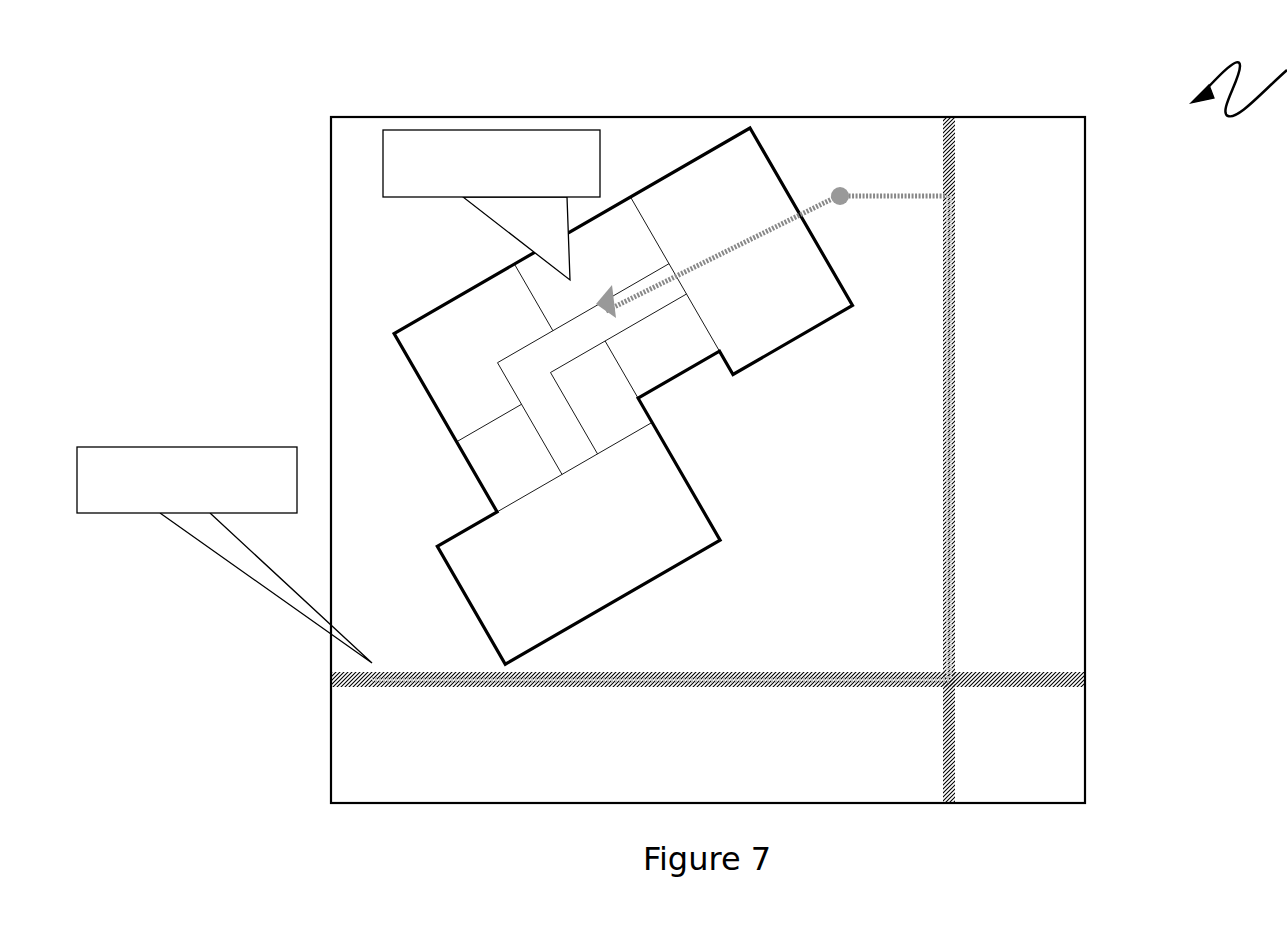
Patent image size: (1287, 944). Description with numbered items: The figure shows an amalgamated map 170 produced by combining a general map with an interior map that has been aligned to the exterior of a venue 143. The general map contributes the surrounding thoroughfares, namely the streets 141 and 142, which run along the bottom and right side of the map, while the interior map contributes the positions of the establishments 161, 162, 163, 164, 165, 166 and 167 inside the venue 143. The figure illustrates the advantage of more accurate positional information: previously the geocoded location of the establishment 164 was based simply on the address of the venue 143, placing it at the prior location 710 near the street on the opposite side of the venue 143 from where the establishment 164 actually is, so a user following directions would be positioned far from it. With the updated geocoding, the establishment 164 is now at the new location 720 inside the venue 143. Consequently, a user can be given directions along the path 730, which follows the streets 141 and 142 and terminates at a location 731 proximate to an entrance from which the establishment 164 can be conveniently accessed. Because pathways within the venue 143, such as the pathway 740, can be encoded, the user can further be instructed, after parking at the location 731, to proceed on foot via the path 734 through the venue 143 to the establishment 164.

The amalgamated map 170 is at (331, 157).
The venue 143 is at (457, 307).
The street 141 is at (978, 678).
The street 142 is at (955, 702).
The establishment 161 is at (591, 413).
The establishment 162 is at (633, 346).
The establishment 163 is at (770, 273).
The establishment 164 is at (616, 274).
The establishment 165 is at (488, 380).
The establishment 166 is at (526, 429).
The establishment 167 is at (595, 494).
The prior geocoded location 710 is at (205, 447).
The new geocoded location 720 is at (470, 130).
The path 730 is at (947, 420).
The location 731 is at (840, 208).
The path 734 is at (813, 211).
The pathway 740 is at (522, 376).